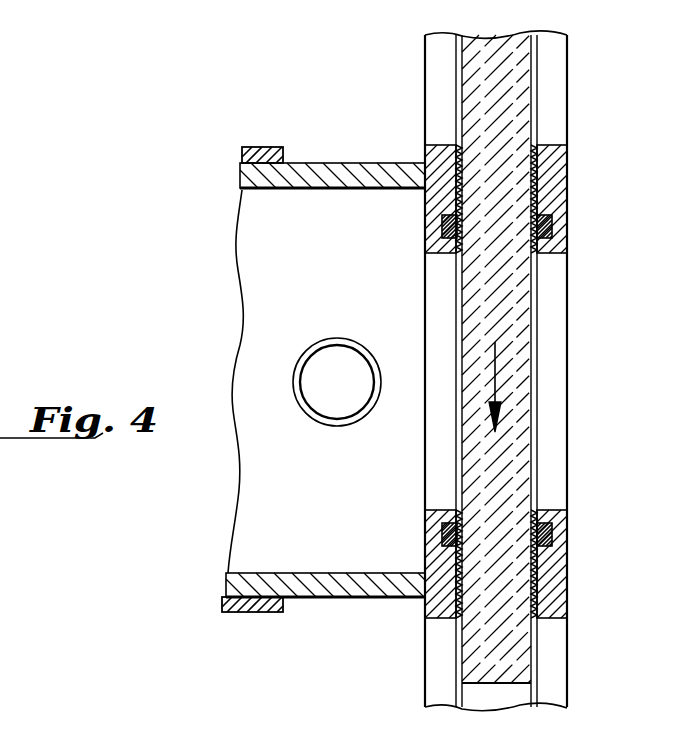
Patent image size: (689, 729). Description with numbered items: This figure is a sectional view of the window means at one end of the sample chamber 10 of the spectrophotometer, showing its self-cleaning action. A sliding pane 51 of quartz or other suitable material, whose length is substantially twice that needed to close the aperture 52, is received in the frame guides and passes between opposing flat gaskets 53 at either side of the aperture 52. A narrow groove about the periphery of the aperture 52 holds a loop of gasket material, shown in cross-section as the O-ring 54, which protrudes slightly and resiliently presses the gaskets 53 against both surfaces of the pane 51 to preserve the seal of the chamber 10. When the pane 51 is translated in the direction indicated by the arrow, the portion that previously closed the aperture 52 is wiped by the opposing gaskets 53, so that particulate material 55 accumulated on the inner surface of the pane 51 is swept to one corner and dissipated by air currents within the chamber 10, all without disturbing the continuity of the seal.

The sample chamber 10 is at (254, 272).
The pane 51 is at (505, 457).
The aperture 52 is at (542, 310).
The gasket 53 is at (460, 75).
The O-ring 54 is at (428, 213).
The particulate material 55 is at (462, 354).